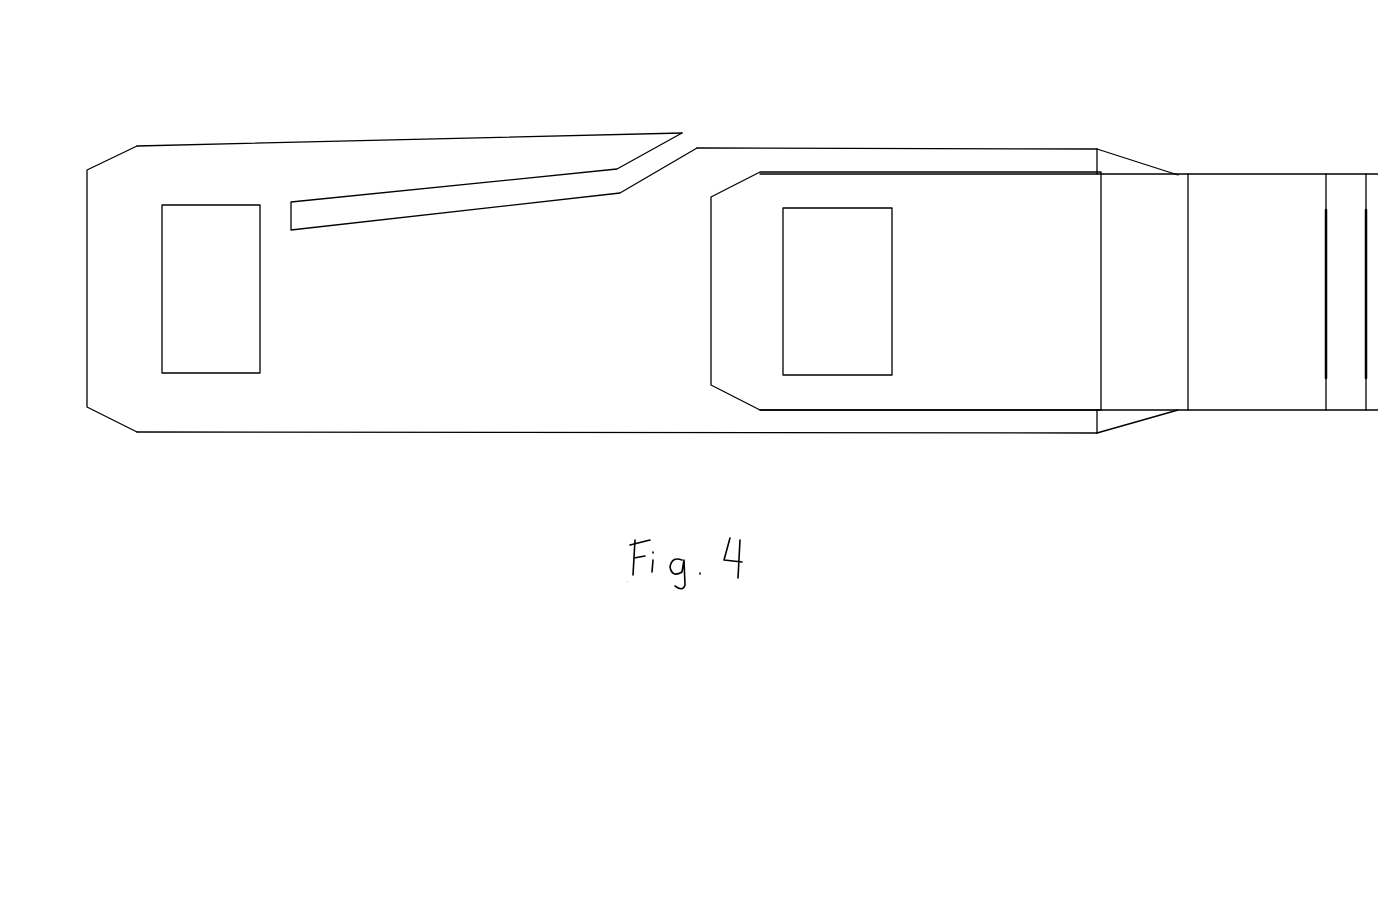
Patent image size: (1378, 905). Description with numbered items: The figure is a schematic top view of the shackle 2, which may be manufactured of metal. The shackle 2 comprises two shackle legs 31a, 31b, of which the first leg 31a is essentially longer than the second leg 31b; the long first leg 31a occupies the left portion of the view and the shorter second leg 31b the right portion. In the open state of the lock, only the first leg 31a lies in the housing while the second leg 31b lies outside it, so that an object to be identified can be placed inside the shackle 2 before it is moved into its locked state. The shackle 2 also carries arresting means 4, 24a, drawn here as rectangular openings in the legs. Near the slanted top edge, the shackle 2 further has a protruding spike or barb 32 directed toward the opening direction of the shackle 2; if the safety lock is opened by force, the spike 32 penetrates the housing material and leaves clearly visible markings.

The shackle 2 is at (548, 400).
The arresting means 4 is at (834, 260).
The arresting means 24a is at (211, 352).
The first shackle leg 31a is at (432, 345).
The second shackle leg 31b is at (1052, 314).
The spike 32 is at (620, 155).